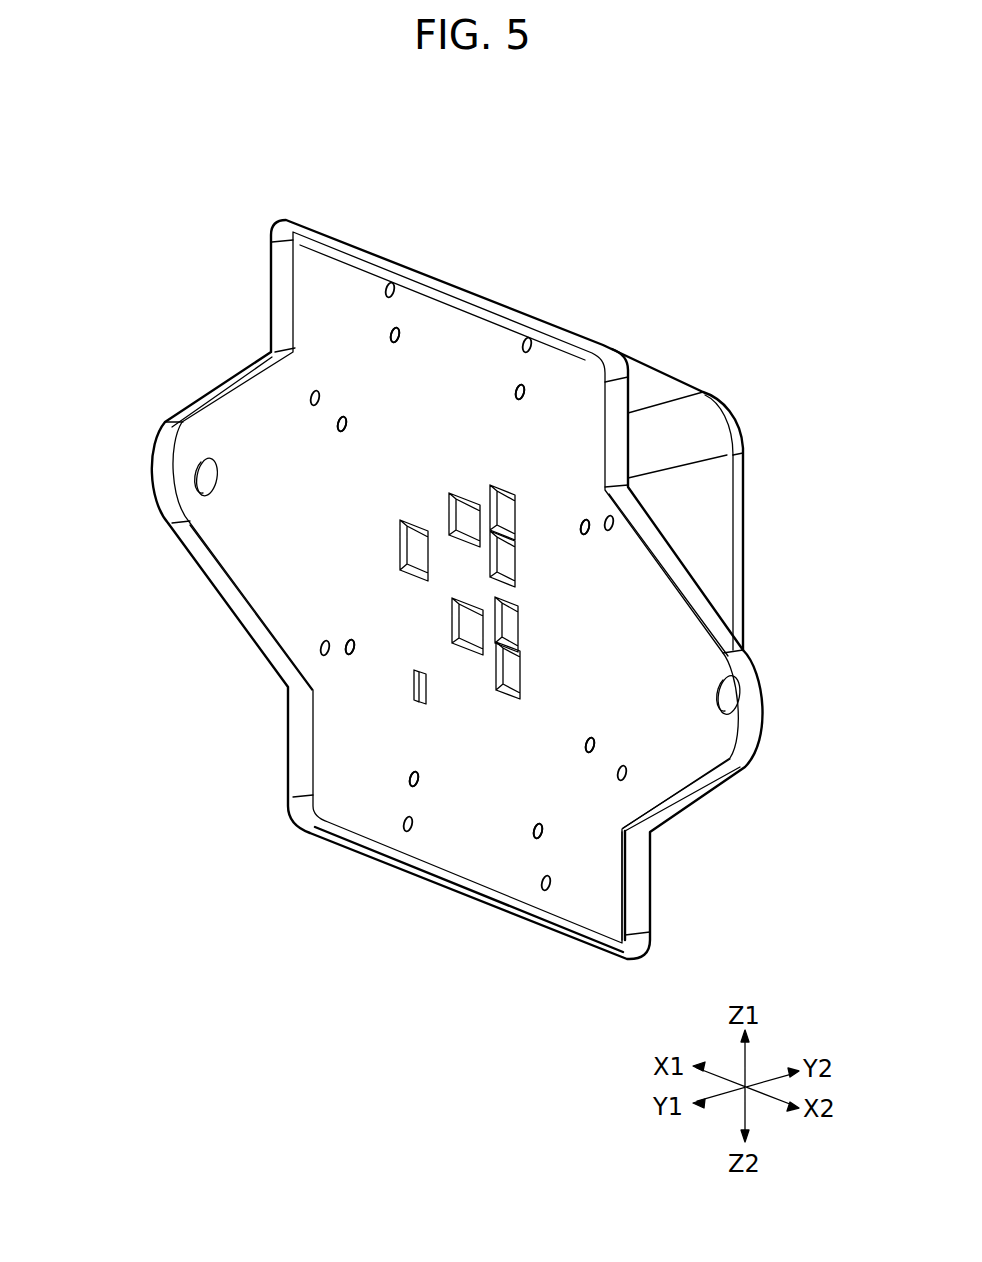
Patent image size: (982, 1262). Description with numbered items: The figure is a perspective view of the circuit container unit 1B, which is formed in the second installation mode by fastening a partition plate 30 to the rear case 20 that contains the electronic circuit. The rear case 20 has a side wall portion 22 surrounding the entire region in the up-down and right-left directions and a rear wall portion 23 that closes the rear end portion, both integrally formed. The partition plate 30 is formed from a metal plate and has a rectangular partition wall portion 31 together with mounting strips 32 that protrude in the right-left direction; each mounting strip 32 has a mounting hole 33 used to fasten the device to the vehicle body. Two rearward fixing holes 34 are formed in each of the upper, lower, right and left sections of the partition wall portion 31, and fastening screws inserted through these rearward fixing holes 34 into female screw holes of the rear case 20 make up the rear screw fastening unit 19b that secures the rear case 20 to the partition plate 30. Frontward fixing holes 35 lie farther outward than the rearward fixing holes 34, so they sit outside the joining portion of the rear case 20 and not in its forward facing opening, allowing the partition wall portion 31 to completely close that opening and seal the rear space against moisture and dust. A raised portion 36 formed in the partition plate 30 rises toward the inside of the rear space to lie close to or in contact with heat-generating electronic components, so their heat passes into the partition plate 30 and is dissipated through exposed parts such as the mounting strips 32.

The circuit container unit 1B is at (609, 252).
The rear case 20 is at (680, 377).
The side wall portion 22 is at (716, 544).
The rear wall portion 23 is at (746, 465).
The partition plate 30 is at (352, 822).
The partition wall portion 31 is at (582, 828).
The mounting strip 32 is at (232, 545).
The mounting hole 33 is at (198, 484).
The rearward fixing hole 34 is at (519, 397).
The rear screw fastening unit 19b is at (466, 583).
The frontward fixing hole 35 is at (527, 343).
The raised portion 36 is at (512, 670).